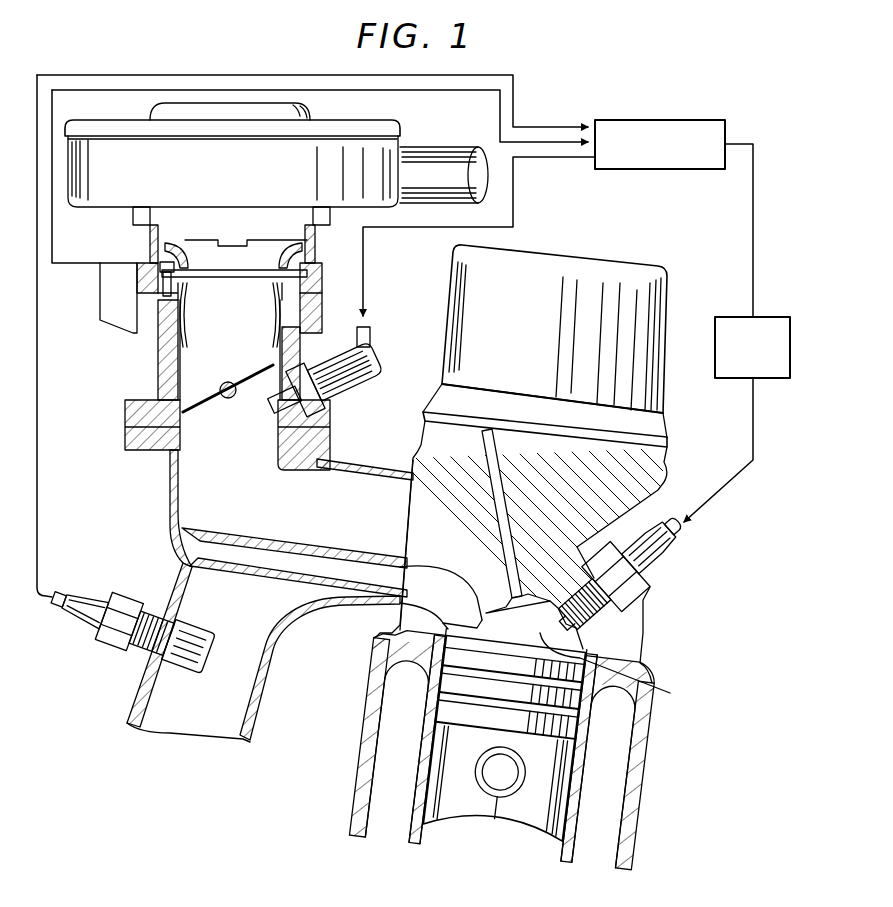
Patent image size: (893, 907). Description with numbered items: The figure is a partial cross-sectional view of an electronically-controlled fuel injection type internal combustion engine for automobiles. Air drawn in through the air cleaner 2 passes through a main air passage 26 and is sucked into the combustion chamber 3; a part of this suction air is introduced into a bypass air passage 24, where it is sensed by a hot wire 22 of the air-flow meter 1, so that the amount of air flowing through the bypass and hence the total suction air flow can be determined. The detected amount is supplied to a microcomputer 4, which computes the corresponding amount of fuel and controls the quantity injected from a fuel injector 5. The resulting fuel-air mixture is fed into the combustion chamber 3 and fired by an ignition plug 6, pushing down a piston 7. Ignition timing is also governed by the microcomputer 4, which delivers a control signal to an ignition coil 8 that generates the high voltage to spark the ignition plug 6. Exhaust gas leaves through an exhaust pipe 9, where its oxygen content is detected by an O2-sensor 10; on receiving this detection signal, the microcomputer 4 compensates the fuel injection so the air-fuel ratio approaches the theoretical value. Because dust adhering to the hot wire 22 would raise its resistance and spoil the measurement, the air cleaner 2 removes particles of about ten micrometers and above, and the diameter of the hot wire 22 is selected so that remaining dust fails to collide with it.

The air-flow meter 1 is at (114, 297).
The air cleaner 2 is at (92, 195).
The combustion chamber 3 is at (590, 557).
The microcomputer 4 is at (645, 120).
The fuel injector 5 is at (346, 380).
The ignition plug 6 is at (668, 570).
The piston 7 is at (458, 800).
The ignition coil 8 is at (732, 379).
The exhaust pipe 9 is at (253, 636).
The O2-sensor 10 is at (92, 618).
The hot wire 22 is at (178, 318).
The bypass air passage 24 is at (161, 288).
The main air passage 26 is at (217, 340).